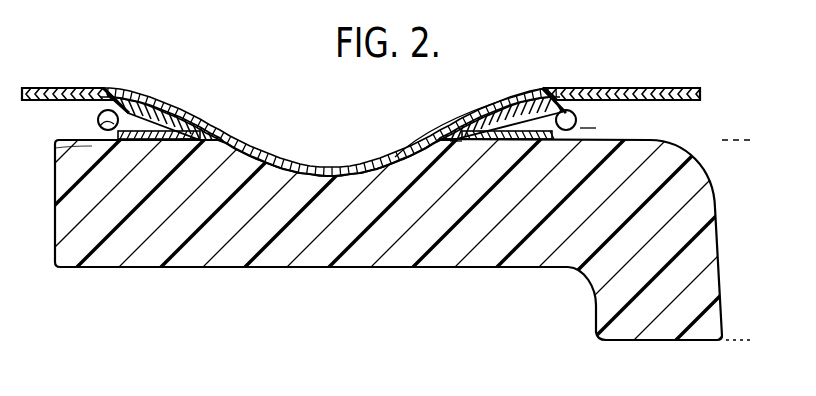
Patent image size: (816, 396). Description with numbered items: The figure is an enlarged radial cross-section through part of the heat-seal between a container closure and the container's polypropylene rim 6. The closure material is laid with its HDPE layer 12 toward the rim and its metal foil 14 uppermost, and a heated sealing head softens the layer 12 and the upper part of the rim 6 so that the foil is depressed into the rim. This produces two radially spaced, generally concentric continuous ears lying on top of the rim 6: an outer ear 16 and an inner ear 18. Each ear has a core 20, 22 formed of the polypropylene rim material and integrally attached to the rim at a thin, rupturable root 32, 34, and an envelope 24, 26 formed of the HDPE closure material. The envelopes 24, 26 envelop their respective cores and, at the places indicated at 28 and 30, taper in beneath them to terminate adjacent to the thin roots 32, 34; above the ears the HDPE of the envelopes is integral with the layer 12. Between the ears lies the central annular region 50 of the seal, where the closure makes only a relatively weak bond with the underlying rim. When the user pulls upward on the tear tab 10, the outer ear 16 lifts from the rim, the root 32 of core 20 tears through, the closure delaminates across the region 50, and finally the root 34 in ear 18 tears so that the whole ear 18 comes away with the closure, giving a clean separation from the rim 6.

The rim 6 is at (322, 218).
The tear tab 10 is at (100, 88).
The HDPE layer 12 is at (590, 90).
The foil 14 is at (212, 117).
The outer ear 16 is at (85, 125).
The inner ear 18 is at (606, 131).
The core 20 is at (132, 140).
The core 22 is at (554, 132).
The envelope 24 is at (93, 147).
The envelope 26 is at (588, 117).
The taper 28 is at (186, 140).
The taper 30 is at (506, 138).
The root 32 is at (233, 155).
The root 34 is at (457, 154).
The central annular region 50 is at (330, 149).